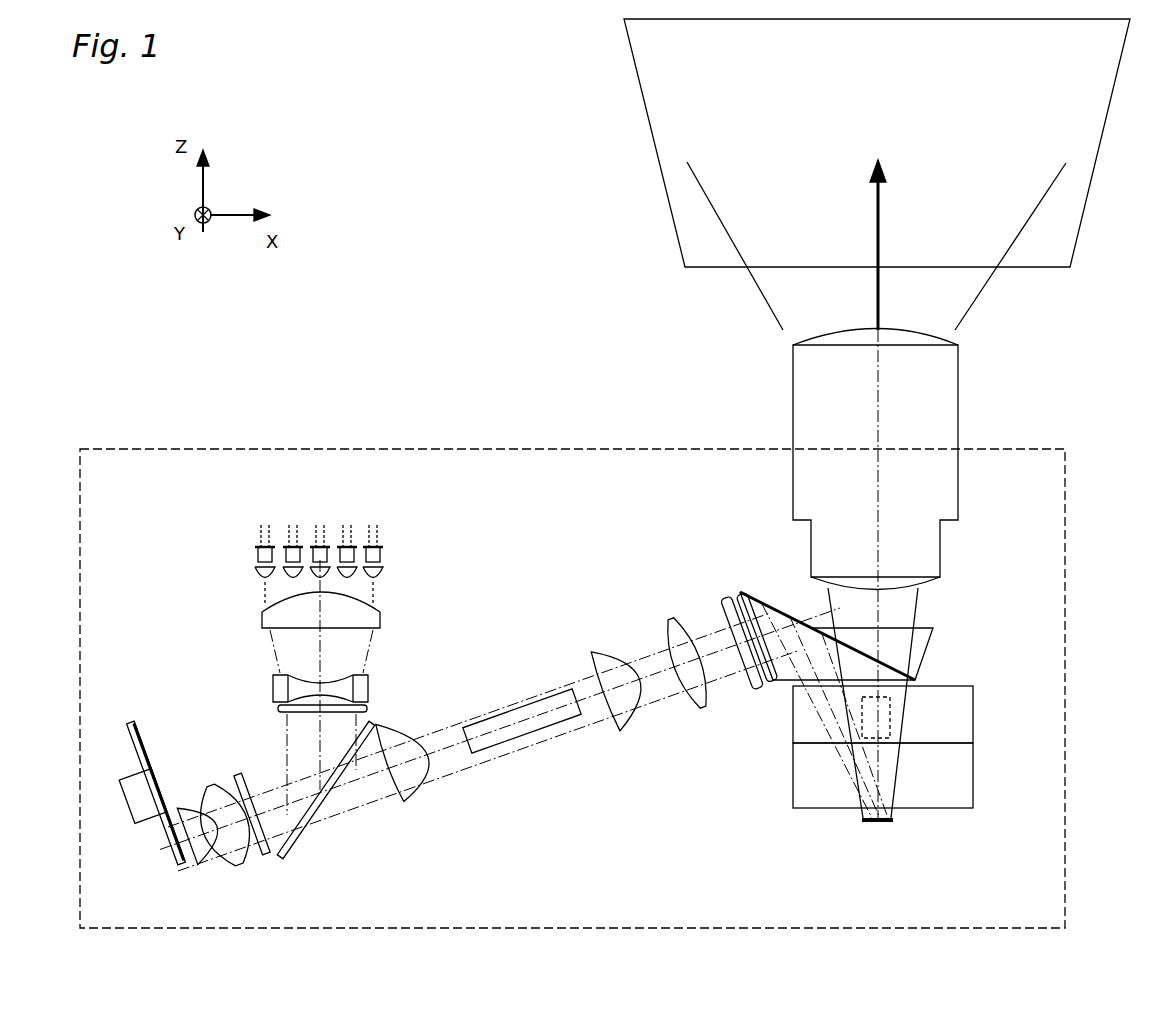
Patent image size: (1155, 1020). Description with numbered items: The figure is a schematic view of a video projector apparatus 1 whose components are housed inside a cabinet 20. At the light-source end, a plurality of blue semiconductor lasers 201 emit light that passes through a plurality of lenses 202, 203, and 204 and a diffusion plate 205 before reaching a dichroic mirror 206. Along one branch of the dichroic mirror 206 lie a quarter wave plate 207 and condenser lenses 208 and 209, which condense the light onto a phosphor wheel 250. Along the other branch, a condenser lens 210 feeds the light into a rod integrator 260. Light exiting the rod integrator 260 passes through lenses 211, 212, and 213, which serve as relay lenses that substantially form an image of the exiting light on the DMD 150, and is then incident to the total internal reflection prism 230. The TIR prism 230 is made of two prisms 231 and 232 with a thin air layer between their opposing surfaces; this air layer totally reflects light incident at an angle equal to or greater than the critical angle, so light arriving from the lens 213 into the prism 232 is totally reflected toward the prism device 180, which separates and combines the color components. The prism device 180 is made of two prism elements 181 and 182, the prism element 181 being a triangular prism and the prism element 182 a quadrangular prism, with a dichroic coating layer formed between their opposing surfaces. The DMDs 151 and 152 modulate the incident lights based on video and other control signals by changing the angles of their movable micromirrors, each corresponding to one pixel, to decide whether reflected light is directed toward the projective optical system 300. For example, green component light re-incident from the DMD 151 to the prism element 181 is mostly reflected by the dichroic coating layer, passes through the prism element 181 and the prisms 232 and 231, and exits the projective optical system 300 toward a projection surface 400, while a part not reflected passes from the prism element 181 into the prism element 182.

The video projector apparatus 1 is at (497, 304).
The cabinet 20 is at (292, 448).
The DMD 150 is at (773, 786).
The DMD 151 is at (872, 718).
The DMD 152 is at (863, 823).
The prism device 180 is at (912, 797).
The prism element 181 is at (912, 778).
The prism element 182 is at (975, 835).
The blue semiconductor lasers 201 is at (383, 553).
The lens 202 is at (387, 572).
The lens 203 is at (360, 608).
The lens 204 is at (273, 683).
The diffusion plate 205 is at (280, 709).
The dichroic mirror 206 is at (318, 807).
The quarter wave plate 207 is at (267, 852).
The condenser lens 208 is at (235, 856).
The condenser lens 209 is at (206, 852).
The condenser lens 210 is at (413, 783).
The lens 211 is at (632, 702).
The lens 212 is at (690, 678).
The lens 213 is at (753, 657).
The total internal reflection prism 230 is at (784, 645).
The prism 231 is at (823, 630).
The prism 232 is at (762, 598).
The phosphor wheel 250 is at (157, 779).
The rod integrator 260 is at (510, 733).
The projective optical system 300 is at (820, 450).
The projection surface 400 is at (660, 73).